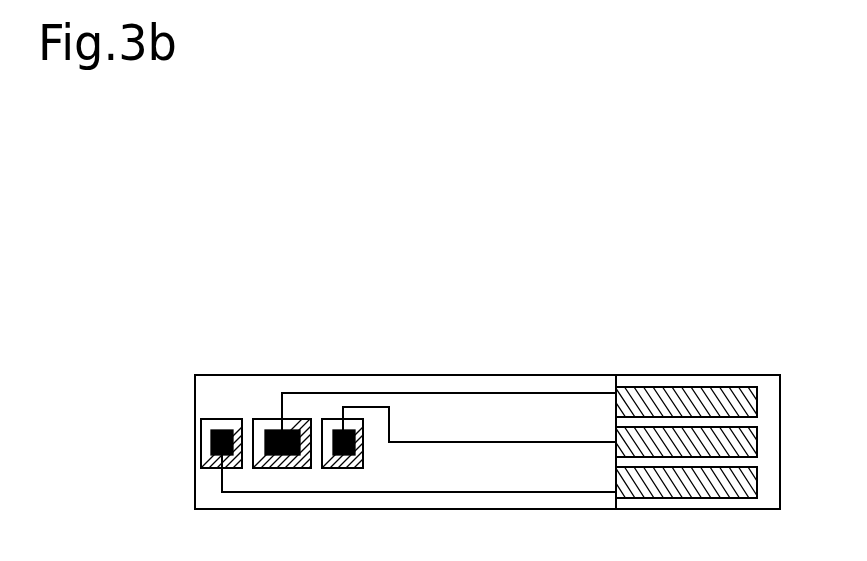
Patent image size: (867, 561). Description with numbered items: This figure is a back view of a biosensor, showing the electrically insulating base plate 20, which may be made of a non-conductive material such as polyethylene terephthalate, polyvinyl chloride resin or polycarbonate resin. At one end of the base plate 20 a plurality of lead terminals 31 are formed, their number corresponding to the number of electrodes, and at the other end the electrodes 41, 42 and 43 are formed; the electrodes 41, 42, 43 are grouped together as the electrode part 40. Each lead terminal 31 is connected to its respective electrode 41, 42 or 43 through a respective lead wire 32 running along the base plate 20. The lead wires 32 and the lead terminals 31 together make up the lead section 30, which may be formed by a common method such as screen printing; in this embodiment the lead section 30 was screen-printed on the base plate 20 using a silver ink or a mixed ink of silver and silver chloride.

The electrically insulating base plate 20 is at (410, 375).
The lead section 30 is at (683, 255).
The lead terminals 31 is at (650, 393).
The lead wires 32 is at (577, 393).
The sensing element part 40 is at (357, 265).
The electrode 41 is at (263, 430).
The electrode 42 is at (333, 430).
The electrode 43 is at (221, 430).